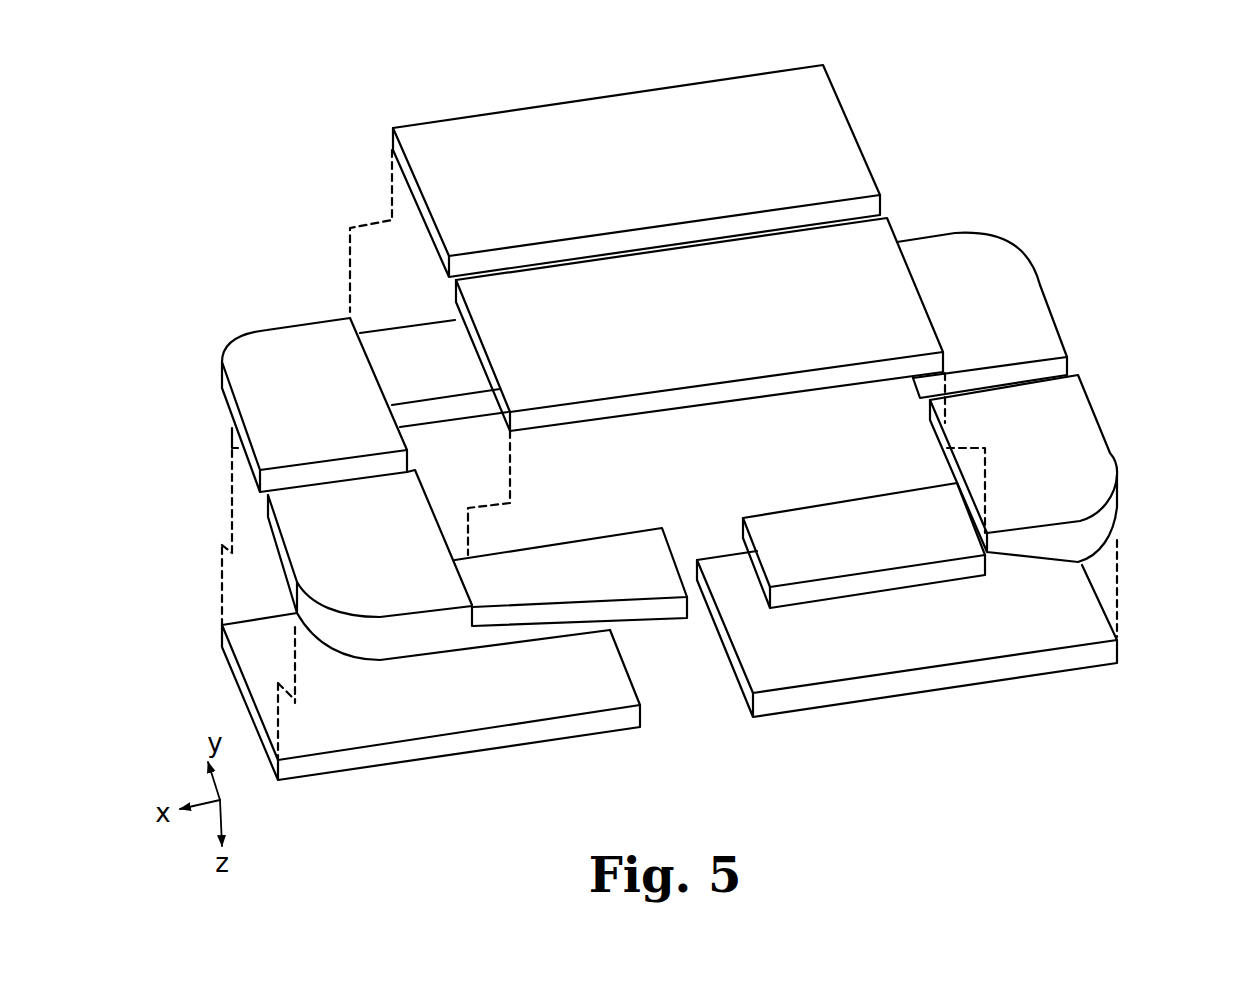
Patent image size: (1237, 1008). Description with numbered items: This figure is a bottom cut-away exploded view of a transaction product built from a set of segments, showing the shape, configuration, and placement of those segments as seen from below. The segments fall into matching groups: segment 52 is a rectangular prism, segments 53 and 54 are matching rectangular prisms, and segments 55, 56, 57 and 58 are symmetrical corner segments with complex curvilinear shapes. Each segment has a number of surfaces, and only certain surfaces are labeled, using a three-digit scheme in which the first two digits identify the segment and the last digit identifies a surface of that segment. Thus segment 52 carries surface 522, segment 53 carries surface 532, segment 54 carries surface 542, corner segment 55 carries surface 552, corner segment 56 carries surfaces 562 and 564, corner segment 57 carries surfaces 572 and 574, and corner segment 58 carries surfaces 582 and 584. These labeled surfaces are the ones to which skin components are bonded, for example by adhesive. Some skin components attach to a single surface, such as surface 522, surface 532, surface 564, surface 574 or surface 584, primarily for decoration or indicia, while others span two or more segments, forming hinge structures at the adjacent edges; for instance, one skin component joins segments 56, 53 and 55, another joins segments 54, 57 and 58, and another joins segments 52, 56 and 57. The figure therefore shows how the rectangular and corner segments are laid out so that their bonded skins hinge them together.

The segment 52 is at (431, 729).
The surface 522 is at (420, 705).
The segment 53 is at (755, 382).
The surface 532 is at (599, 172).
The segment 54 is at (699, 344).
The surface 542 is at (637, 333).
The segment 55 is at (982, 350).
The surface 552 is at (955, 313).
The segment 56 is at (340, 387).
The surface 562 is at (281, 405).
The surface 564 is at (402, 375).
The segment 57 is at (431, 545).
The surface 572 is at (346, 565).
The surface 574 is at (538, 592).
The segment 58 is at (977, 506).
The surface 582 is at (1020, 475).
The surface 584 is at (826, 552).